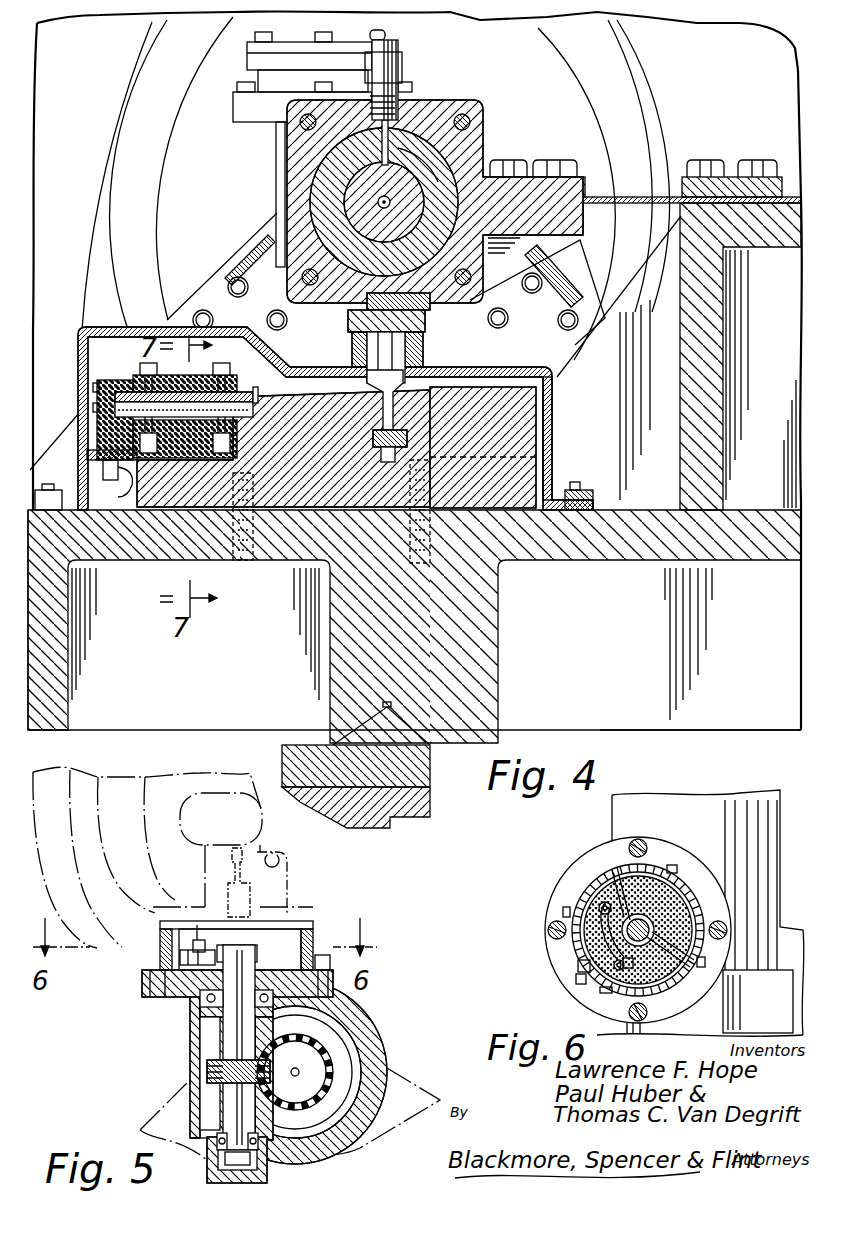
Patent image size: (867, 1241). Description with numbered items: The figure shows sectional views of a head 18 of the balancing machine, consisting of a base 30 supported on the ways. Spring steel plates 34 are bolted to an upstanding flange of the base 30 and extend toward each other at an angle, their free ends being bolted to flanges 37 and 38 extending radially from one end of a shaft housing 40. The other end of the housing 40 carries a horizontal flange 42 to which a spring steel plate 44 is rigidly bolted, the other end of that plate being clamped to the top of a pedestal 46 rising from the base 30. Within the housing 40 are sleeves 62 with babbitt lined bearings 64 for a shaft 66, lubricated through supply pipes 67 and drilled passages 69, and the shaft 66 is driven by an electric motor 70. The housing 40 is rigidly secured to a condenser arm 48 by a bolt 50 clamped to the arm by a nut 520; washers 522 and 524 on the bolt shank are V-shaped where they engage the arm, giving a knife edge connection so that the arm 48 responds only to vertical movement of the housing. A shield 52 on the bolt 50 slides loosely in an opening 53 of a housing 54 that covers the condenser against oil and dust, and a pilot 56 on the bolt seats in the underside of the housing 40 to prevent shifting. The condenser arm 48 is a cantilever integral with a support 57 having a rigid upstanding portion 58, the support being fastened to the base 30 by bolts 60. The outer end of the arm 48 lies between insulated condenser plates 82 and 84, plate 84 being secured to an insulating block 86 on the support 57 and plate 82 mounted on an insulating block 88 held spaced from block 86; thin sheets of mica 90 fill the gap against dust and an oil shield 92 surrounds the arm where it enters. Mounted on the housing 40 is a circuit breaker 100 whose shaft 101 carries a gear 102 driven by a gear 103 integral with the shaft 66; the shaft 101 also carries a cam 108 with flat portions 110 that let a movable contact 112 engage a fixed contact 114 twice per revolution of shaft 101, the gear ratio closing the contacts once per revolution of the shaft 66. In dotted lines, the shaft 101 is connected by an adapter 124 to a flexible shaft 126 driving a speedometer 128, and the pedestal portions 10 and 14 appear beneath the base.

In FIG. 4, the base pedestal 10 is at (388, 830).
In FIG. 4, the foot block 14 is at (432, 770).
In FIG. 4, the head 18 is at (663, 729).
In FIG. 4, the base 30 is at (614, 561).
In FIG. 4, the spring steel plates 34 is at (167, 320).
In FIG. 4, the flange 37 is at (255, 235).
In FIG. 4, the flange 38 is at (573, 297).
In FIG. 4, the shaft housing 40 is at (480, 117).
In FIG. 5, the shaft housing 40 is at (347, 1000).
In FIG. 6, the shaft housing 40 is at (775, 803).
In FIG. 4, the horizontal flange 42 is at (583, 224).
In FIG. 4, the spring steel plate 44 is at (627, 198).
In FIG. 4, the pedestal 46 is at (765, 249).
In FIG. 4, the condenser arm 48 is at (335, 400).
In FIG. 4, the bolt 50 is at (428, 330).
In FIG. 4, the shield 52 is at (352, 342).
In FIG. 4, the opening 53 is at (367, 355).
In FIG. 4, the housing 54 is at (552, 420).
In FIG. 4, the pilot 56 is at (430, 302).
In FIG. 4, the support 57 is at (292, 460).
In FIG. 4, the upstanding portion 58 is at (527, 430).
In FIG. 4, the bolts 60 is at (240, 560).
In FIG. 4, the sleeves 62 is at (320, 158).
In FIG. 4, the bearings 64 is at (345, 202).
In FIG. 4, the shaft 66 is at (423, 170).
In FIG. 5, the shaft 66 is at (325, 1085).
In FIG. 4, the supply pipes 67 is at (395, 33).
In FIG. 4, the drilled passages 69 is at (431, 118).
In FIG. 4, the electric motor 70 is at (120, 95).
In FIG. 4, the condenser plate 82 is at (205, 372).
In FIG. 4, the condenser plate 84 is at (245, 405).
In FIG. 4, the block of insulating material 86 is at (240, 438).
In FIG. 4, the insulating block 88 is at (135, 373).
In FIG. 4, the sheets of mica 90 is at (100, 407).
In FIG. 4, the oil shield 92 is at (256, 390).
In FIG. 4, the circuit breaker 100 is at (258, 60).
In FIG. 5, the circuit breaker 100 is at (155, 950).
In FIG. 6, the circuit breaker 100 is at (570, 878).
In FIG. 5, the shaft 101 is at (232, 1028).
In FIG. 6, the shaft 101 is at (655, 940).
In FIG. 5, the gear 102 is at (207, 1072).
In FIG. 5, the gear 103 is at (330, 1060).
In FIG. 5, the cam 108 is at (255, 965).
In FIG. 6, the cam 108 is at (652, 926).
In FIG. 6, the flat portions 110 is at (618, 870).
In FIG. 5, the movable contact 112 is at (195, 940).
In FIG. 6, the movable contact 112 is at (613, 962).
In FIG. 6, the fixed contact 114 is at (636, 985).
In FIG. 5, the adapter 124 is at (287, 907).
In FIG. 5, the flexible shaft 126 is at (245, 858).
In FIG. 5, the speedometer 128 is at (85, 950).
In FIG. 4, the nut 520 is at (410, 462).
In FIG. 4, the washer 522 is at (367, 378).
In FIG. 4, the washer 524 is at (400, 447).